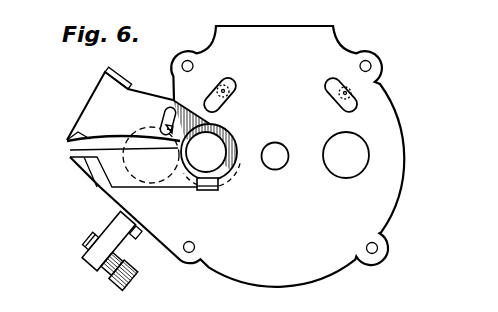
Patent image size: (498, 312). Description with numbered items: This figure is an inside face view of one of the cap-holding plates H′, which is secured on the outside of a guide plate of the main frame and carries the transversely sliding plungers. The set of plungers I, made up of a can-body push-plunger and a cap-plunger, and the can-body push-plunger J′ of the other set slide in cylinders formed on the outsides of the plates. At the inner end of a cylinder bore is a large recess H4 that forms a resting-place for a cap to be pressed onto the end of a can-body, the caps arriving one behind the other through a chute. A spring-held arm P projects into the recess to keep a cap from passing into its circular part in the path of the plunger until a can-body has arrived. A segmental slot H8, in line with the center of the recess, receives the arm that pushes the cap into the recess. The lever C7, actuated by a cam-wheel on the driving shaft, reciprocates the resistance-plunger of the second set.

The cap-holding plate H′ is at (237, 156).
The segmental slot H8 is at (100, 144).
The recess H4 is at (180, 181).
The can-body push-plunger J′ is at (214, 148).
The set of plungers I is at (217, 191).
The arm P is at (177, 112).
The lever C7 is at (117, 245).